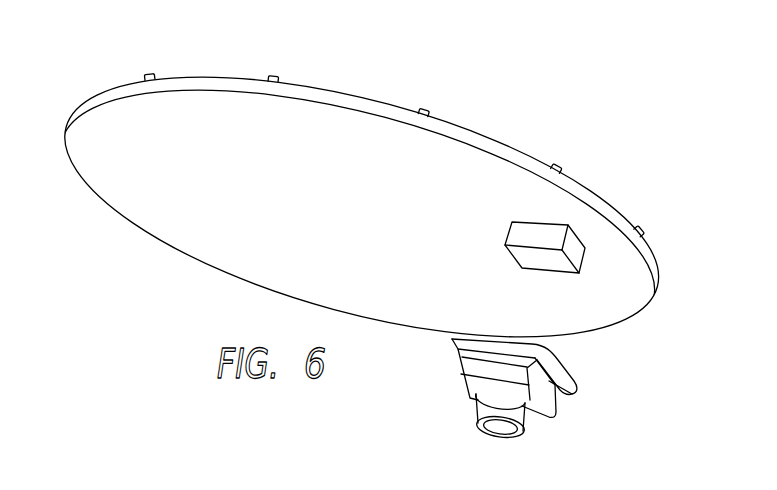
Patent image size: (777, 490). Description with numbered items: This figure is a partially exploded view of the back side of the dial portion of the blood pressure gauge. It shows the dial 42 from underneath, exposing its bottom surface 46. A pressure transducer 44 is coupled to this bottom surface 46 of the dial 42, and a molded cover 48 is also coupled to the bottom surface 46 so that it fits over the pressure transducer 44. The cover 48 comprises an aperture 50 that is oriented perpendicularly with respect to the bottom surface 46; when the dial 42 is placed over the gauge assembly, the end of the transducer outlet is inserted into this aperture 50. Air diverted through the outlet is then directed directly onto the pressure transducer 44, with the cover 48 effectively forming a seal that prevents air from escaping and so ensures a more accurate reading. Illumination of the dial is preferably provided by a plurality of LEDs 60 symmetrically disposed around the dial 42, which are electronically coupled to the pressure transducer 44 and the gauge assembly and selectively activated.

The dial 42 is at (197, 215).
The pressure transducer 44 is at (575, 258).
The bottom surface 46 is at (420, 200).
The molded cover 48 is at (550, 390).
The aperture 50 is at (512, 436).
The LEDs 60 is at (285, 480).